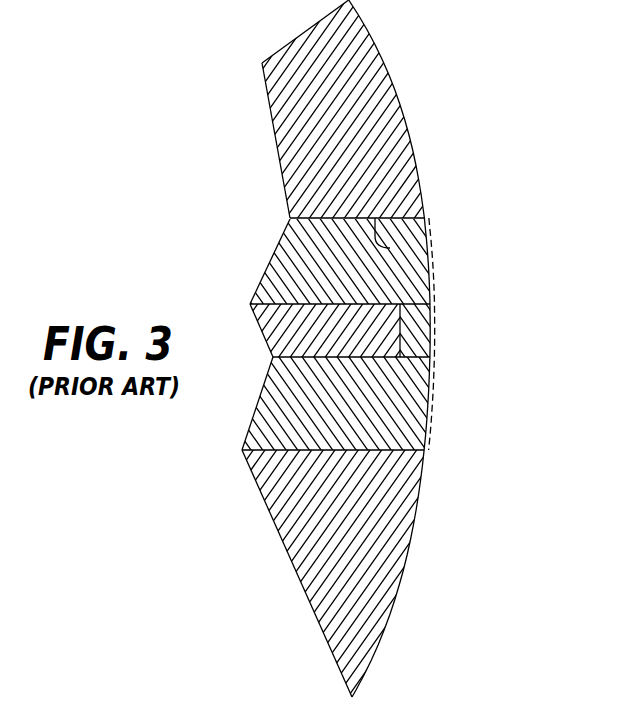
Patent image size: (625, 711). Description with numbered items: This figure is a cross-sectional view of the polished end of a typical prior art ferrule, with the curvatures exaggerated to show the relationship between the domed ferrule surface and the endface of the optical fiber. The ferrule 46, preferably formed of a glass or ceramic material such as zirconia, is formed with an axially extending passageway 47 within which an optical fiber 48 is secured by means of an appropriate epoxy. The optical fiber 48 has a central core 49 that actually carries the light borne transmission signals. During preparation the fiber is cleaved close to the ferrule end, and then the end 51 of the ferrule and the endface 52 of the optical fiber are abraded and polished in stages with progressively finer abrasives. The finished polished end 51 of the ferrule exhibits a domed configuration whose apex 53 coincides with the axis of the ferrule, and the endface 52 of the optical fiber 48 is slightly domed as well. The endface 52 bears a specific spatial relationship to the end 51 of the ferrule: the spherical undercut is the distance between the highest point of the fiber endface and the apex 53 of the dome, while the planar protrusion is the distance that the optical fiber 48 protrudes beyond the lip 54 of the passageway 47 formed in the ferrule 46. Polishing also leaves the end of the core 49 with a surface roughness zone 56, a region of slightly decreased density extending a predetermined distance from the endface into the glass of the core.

The ferrule 46 is at (372, 41).
The end of the ferrule 51 is at (392, 88).
The passageway 47 is at (390, 248).
The endface of the optical fiber 52 is at (432, 270).
The central core 49 is at (366, 313).
The surface roughness zone 56 is at (418, 332).
The apex of the dome 53 is at (430, 348).
The optical fiber 48 is at (429, 386).
The lip of the passageway 54 is at (422, 448).